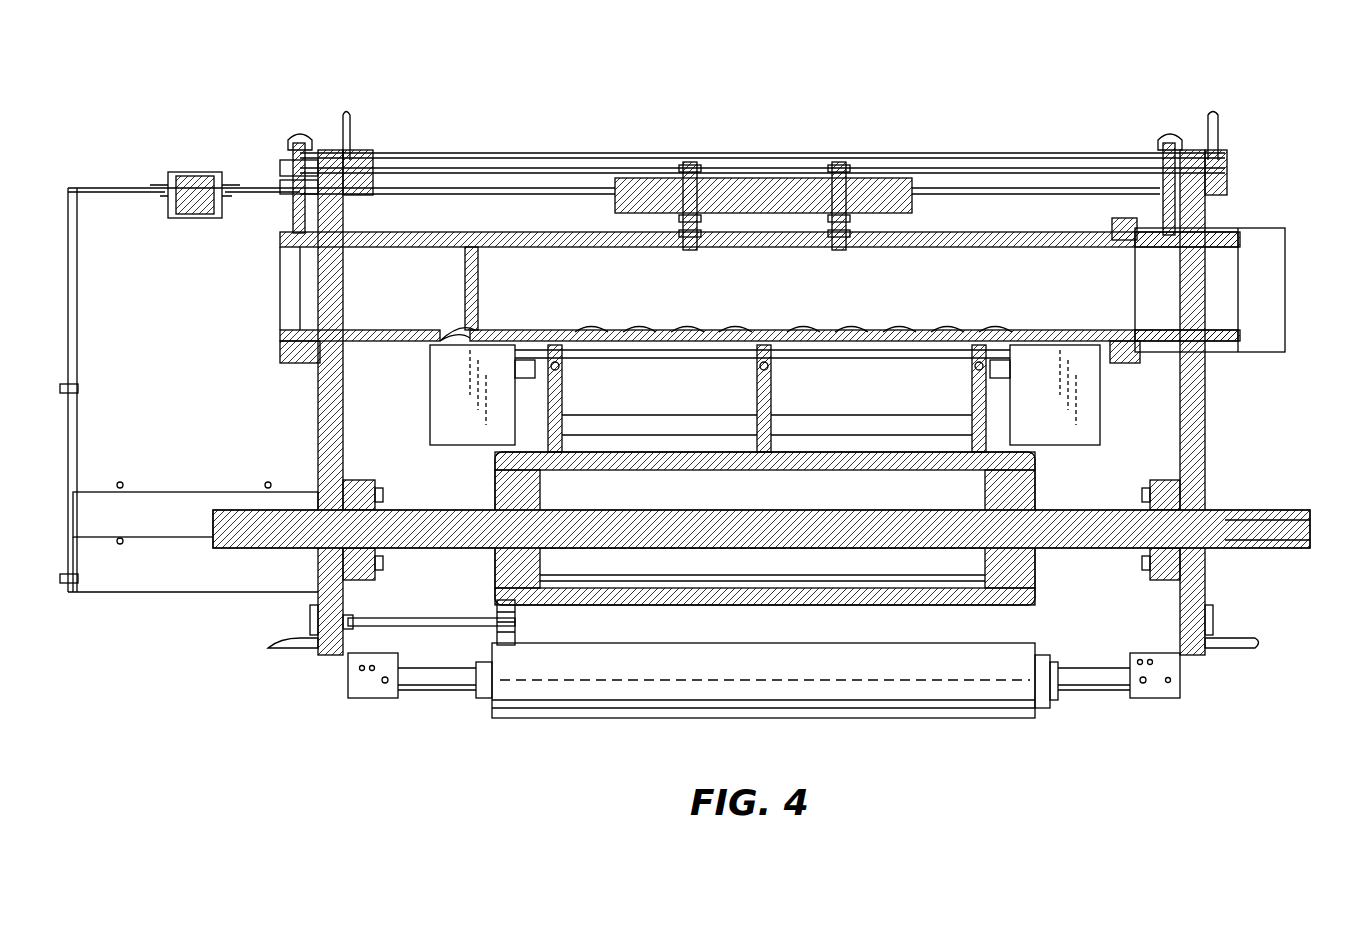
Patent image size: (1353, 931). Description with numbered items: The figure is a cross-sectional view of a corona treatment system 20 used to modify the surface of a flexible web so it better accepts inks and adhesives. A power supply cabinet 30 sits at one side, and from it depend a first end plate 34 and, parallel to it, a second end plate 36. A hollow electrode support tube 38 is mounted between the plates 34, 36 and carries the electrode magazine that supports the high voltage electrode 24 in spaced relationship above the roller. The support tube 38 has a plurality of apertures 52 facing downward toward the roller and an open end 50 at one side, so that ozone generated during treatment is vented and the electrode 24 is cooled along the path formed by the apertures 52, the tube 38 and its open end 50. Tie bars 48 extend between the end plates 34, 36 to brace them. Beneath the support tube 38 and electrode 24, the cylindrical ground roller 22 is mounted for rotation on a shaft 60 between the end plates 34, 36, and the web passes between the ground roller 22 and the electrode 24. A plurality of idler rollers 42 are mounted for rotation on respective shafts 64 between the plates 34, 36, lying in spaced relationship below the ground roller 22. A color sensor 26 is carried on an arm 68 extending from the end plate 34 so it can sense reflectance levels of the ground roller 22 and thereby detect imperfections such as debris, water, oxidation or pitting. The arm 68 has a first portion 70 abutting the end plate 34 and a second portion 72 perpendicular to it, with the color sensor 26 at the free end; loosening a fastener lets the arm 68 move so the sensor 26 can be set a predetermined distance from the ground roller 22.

The corona treatment system 20 is at (1085, 118).
The ground roller 22 is at (570, 600).
The high voltage electrode 24 is at (1010, 440).
The color sensor 26 is at (493, 640).
The power supply cabinet 30 is at (158, 598).
The first end plate 34 is at (332, 652).
The second end plate 36 is at (1198, 638).
The electrode support tube 38 is at (970, 240).
The idler rollers 42 is at (905, 688).
The tie bars 48 is at (930, 158).
The open end 50 is at (1210, 270).
The apertures 52 is at (642, 328).
The shaft 60 is at (1195, 530).
The shafts 64 is at (1100, 680).
The arm 68 is at (440, 615).
The first portion 70 is at (316, 632).
The second portion 72 is at (412, 625).